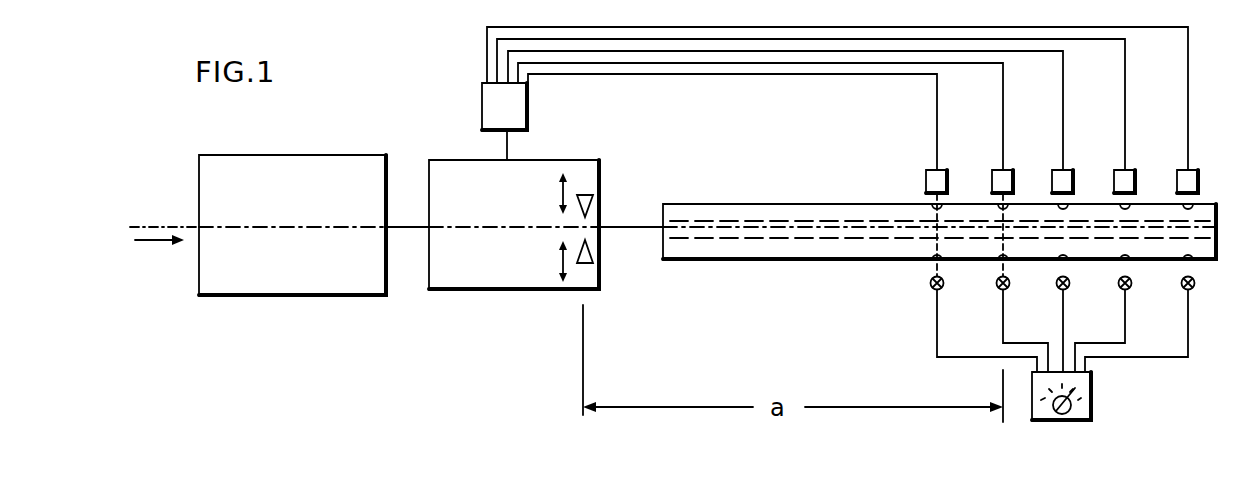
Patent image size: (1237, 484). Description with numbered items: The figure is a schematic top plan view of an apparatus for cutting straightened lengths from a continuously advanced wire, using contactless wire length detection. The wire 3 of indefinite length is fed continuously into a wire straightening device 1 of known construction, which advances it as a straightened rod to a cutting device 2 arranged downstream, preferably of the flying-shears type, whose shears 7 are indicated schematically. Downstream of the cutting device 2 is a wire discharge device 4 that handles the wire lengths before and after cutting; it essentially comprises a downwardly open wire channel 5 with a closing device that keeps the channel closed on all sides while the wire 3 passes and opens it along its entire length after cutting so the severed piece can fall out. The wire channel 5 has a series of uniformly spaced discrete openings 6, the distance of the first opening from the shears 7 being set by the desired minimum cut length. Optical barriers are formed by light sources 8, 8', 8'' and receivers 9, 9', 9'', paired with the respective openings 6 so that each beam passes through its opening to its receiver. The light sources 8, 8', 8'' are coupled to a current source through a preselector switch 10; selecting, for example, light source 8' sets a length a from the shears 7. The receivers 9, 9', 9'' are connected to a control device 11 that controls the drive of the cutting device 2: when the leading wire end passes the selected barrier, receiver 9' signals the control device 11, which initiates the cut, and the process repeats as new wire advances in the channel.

The wire straightening device 1 is at (292, 288).
The cutting device 2 is at (490, 287).
The wire 3 is at (176, 226).
The wire discharge device 4 is at (843, 192).
The wire channel 5 is at (730, 204).
The discrete openings 6 is at (1003, 264).
The shears 7 is at (594, 197).
The light source 8 is at (1140, 325).
The light source 8' is at (1023, 325).
The light source 8'' is at (970, 325).
The receiver 9 is at (1137, 168).
The receiver 9' is at (1014, 165).
The receiver 9'' is at (952, 165).
The preselector switch 10 is at (1092, 408).
The control device 11 is at (490, 102).